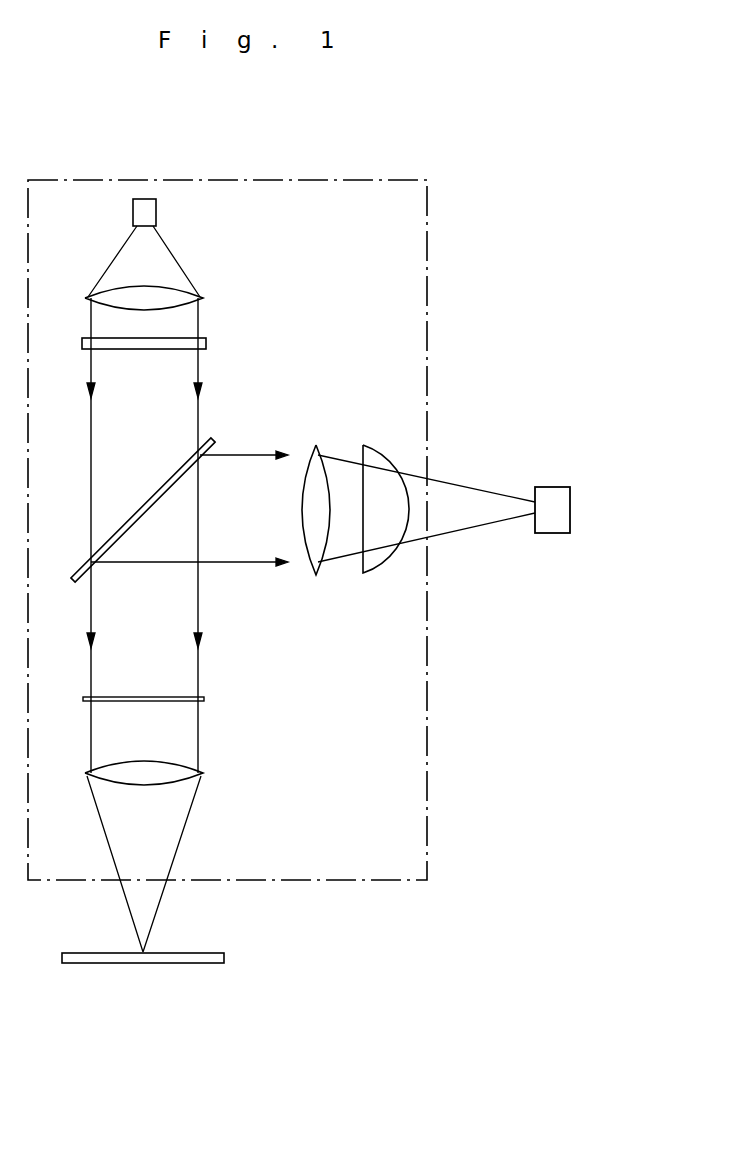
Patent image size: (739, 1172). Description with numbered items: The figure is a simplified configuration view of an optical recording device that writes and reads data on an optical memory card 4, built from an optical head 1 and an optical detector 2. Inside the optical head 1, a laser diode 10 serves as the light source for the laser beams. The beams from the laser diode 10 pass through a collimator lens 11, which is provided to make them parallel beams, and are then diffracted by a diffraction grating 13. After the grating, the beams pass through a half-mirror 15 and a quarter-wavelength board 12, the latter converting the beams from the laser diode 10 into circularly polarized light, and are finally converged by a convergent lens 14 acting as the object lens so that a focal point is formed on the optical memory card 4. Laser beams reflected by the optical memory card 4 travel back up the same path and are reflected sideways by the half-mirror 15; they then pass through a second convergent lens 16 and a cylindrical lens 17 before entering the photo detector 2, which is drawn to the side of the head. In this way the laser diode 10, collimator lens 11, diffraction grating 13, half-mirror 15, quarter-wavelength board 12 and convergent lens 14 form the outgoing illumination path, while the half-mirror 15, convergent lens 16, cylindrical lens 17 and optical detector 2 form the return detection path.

The optical head 1 is at (404, 181).
The optical detector 2 is at (560, 488).
The optical memory card 4 is at (195, 953).
The laser diode 10 is at (157, 207).
The collimator lens 11 is at (195, 293).
The quarter-wavelength board 12 is at (175, 697).
The diffraction grating 13 is at (185, 349).
The convergent lens 14 is at (180, 775).
The half-mirror 15 is at (158, 503).
The convergent lens 16 is at (310, 480).
The cylindrical lens 17 is at (382, 457).